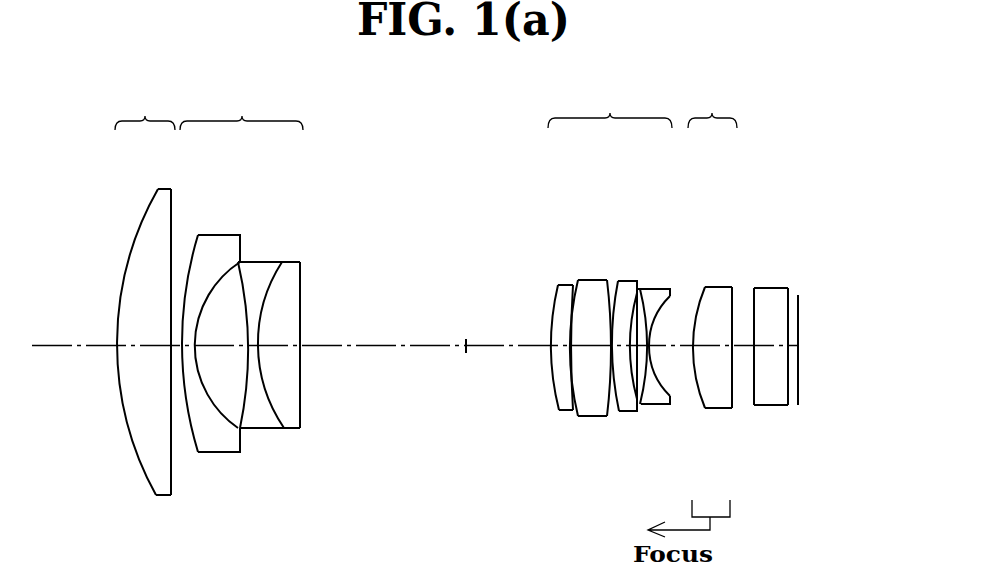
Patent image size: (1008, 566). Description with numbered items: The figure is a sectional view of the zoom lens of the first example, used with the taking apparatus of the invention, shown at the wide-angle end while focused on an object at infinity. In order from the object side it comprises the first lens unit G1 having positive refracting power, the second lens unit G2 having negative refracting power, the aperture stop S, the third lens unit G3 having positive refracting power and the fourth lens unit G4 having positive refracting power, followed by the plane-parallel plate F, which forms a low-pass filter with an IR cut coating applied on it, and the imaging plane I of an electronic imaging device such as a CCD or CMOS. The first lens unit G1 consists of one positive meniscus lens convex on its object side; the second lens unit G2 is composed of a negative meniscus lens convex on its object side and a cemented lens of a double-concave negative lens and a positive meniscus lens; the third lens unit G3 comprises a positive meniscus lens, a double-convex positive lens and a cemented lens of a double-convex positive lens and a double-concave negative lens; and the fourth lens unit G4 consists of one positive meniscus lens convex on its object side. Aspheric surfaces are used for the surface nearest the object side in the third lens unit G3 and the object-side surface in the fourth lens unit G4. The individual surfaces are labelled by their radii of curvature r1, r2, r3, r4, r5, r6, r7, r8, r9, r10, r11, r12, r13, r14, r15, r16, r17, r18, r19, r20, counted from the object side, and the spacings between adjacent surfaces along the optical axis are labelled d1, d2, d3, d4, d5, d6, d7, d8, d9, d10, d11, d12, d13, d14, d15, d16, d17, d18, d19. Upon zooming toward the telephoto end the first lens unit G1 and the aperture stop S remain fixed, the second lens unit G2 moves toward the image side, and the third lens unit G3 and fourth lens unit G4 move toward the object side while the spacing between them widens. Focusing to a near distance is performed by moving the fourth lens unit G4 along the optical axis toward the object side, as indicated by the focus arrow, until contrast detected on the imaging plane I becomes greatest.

The first lens unit G1 is at (145, 103).
The second lens unit G2 is at (241, 103).
The third lens unit G3 is at (610, 103).
The fourth lens unit G4 is at (712, 103).
The aperture stop S is at (470, 291).
The plane-parallel plate F is at (772, 308).
The imaging plane I is at (800, 335).
The radius of curvature of lens surface r1 is at (130, 248).
The radius of curvature of lens surface r2 is at (159, 188).
The radius of curvature of lens surface r3 is at (187, 250).
The radius of curvature of lens surface r4 is at (251, 240).
The radius of curvature of lens surface r5 is at (276, 262).
The radius of curvature of lens surface r6 is at (274, 284).
The radius of curvature of lens surface r7 is at (303, 283).
The radius of curvature of lens surface r8 is at (470, 399).
The radius of curvature of lens surface r9 is at (551, 313).
The radius of curvature of lens surface r10 is at (563, 283).
The radius of curvature of lens surface r11 is at (580, 280).
The radius of curvature of lens surface r12 is at (611, 280).
The radius of curvature of lens surface r13 is at (620, 282).
The radius of curvature of lens surface r14 is at (637, 280).
The radius of curvature of lens surface r15 is at (670, 292).
The radius of curvature of lens surface r16 is at (681, 295).
The radius of curvature of lens surface r17 is at (705, 285).
The radius of curvature of lens surface r18 is at (750, 303).
The radius of curvature of lens surface r19 is at (795, 295).
The radius of curvature of lens surface r20 is at (800, 303).
The spacing between adjacent lens surfaces d1 is at (144, 363).
The spacing between adjacent lens surfaces d2 is at (178, 415).
The spacing between adjacent lens surfaces d3 is at (191, 415).
The spacing between adjacent lens surfaces d4 is at (224, 366).
The spacing between adjacent lens surfaces d5 is at (255, 400).
The spacing between adjacent lens surfaces d6 is at (279, 366).
The spacing between adjacent lens surfaces d7 is at (374, 365).
The spacing between adjacent lens surfaces d8 is at (512, 365).
The spacing between adjacent lens surfaces d9 is at (549, 400).
The spacing between adjacent lens surfaces d10 is at (581, 410).
The spacing between adjacent lens surfaces d11 is at (594, 364).
The spacing between adjacent lens surfaces d12 is at (614, 405).
The spacing between adjacent lens surfaces d13 is at (628, 408).
The spacing between adjacent lens surfaces d14 is at (666, 405).
The spacing between adjacent lens surfaces d15 is at (678, 366).
The spacing between adjacent lens surfaces d16 is at (719, 365).
The spacing between adjacent lens surfaces d17 is at (743, 350).
The spacing between adjacent lens surfaces d18 is at (773, 366).
The spacing between adjacent lens surfaces d19 is at (795, 350).